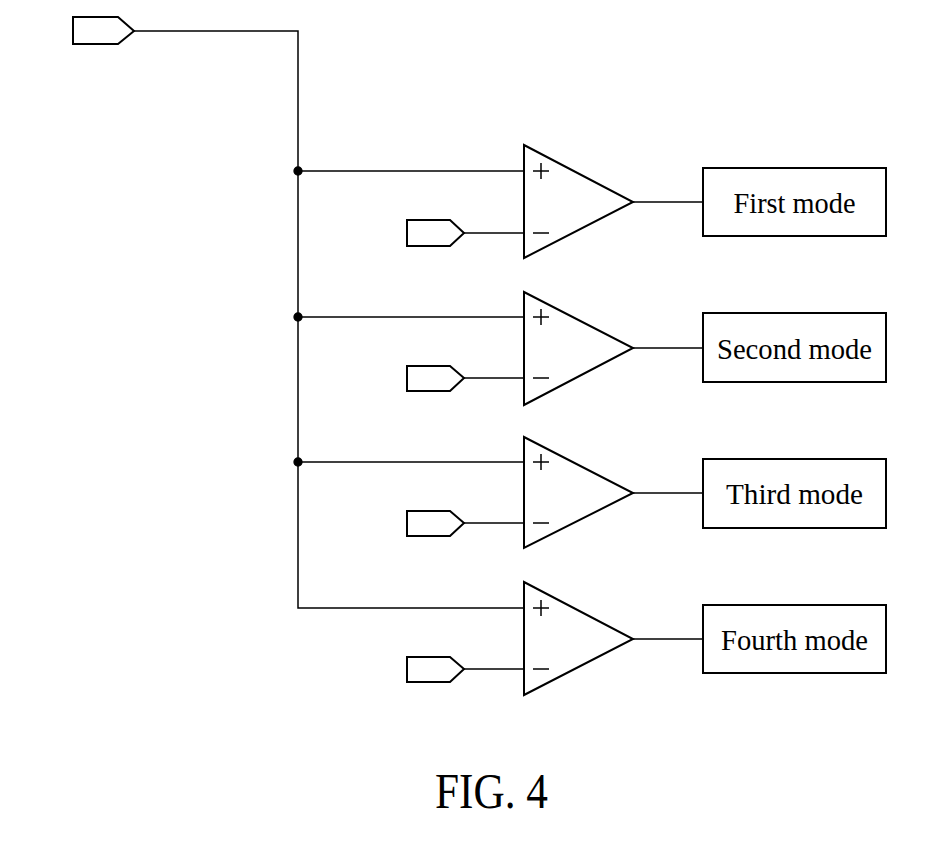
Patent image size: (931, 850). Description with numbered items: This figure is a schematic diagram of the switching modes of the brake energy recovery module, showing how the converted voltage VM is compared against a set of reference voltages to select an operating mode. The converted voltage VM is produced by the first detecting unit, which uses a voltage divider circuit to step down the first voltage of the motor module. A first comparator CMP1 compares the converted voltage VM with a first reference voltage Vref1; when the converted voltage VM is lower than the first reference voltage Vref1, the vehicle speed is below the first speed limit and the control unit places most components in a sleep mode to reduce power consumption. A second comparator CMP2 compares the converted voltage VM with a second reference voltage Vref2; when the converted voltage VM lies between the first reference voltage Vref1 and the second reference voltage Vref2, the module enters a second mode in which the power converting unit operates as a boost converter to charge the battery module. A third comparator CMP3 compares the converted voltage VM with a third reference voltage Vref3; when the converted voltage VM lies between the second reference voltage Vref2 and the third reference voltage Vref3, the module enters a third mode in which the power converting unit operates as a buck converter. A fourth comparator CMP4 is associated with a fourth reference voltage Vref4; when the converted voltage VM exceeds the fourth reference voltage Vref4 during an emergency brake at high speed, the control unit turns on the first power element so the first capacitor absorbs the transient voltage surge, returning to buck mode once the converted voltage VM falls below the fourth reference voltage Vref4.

The converted voltage VM is at (280, 310).
The first comparator CMP1 is at (613, 201).
The second comparator CMP2 is at (613, 348).
The third comparator CMP3 is at (613, 492).
The fourth comparator CMP4 is at (613, 638).
The first reference voltage Vref1 is at (423, 231).
The second reference voltage Vref2 is at (423, 377).
The third reference voltage Vref3 is at (423, 522).
The fourth reference voltage Vref4 is at (423, 668).